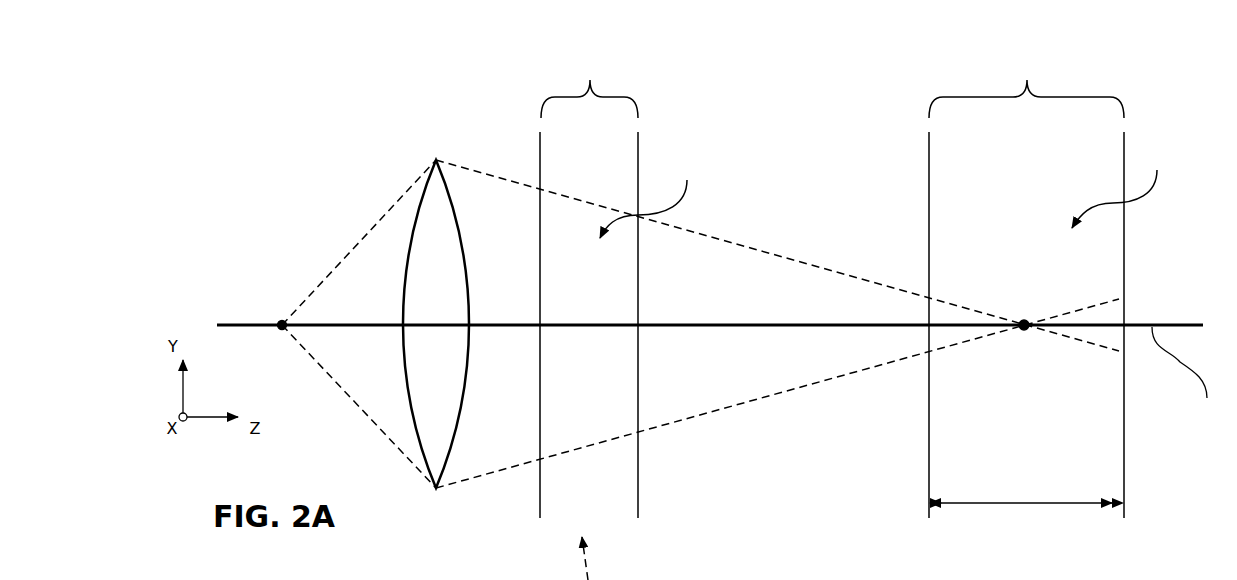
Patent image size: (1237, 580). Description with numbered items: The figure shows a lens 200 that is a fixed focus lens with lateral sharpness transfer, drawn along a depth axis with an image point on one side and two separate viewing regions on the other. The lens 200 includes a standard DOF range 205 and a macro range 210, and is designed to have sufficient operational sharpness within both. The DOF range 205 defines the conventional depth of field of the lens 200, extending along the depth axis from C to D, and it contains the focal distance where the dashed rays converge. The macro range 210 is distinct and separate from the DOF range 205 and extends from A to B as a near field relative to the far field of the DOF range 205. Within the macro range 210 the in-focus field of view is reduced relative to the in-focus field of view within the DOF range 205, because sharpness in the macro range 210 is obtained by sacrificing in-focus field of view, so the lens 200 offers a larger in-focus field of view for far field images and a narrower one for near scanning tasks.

The lens 200 is at (290, 103).
The macro range 210 is at (589, 316).
The DOF range 205 is at (1026, 300).